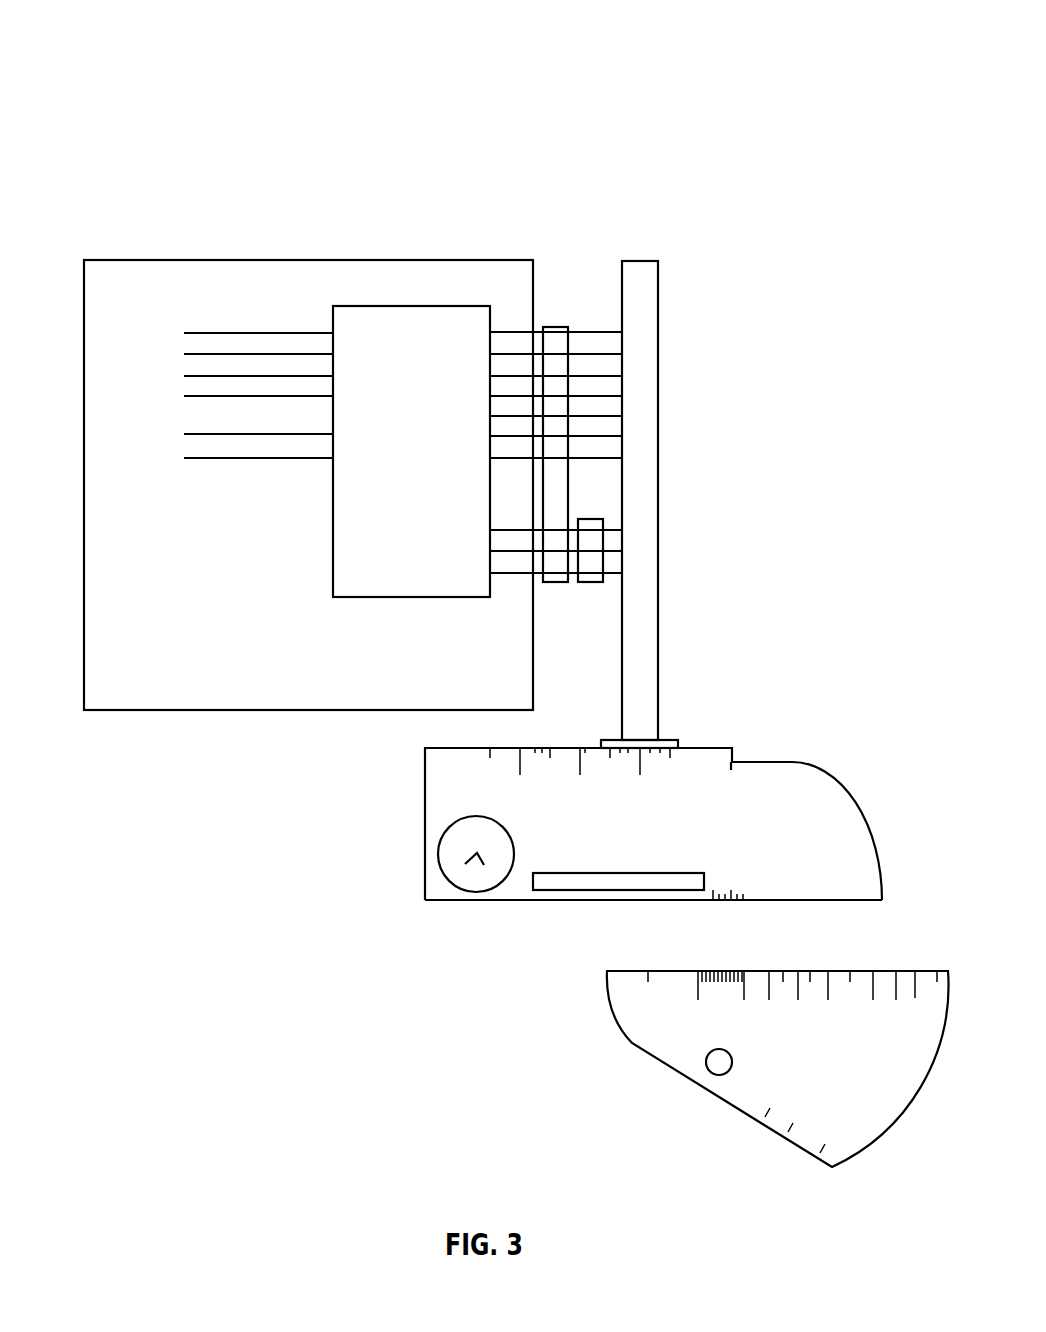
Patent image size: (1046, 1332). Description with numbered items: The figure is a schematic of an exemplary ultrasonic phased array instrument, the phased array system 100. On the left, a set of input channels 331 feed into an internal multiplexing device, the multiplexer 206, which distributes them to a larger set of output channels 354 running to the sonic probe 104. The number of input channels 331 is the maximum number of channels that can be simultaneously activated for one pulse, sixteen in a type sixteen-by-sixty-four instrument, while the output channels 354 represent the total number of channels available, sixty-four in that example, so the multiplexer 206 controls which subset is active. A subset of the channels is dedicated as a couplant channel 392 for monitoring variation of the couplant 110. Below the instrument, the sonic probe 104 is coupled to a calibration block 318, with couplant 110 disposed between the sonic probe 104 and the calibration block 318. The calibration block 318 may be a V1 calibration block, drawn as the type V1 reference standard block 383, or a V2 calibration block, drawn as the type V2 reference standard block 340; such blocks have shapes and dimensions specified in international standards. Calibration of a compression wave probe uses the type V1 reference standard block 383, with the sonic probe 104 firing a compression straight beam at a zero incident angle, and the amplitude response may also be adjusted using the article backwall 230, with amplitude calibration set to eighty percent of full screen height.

The phased array system 100 is at (178, 124).
The input channels 331 is at (269, 338).
The multiplexer 206 is at (390, 304).
The output channels 354 is at (556, 326).
The sonic probe 104 is at (640, 260).
The couplant channel 392 is at (603, 537).
The couplant 110 is at (676, 740).
The calibration block 318 is at (555, 942).
The type V1 reference standard block 383 is at (425, 838).
The article backwall 230 is at (653, 900).
The type V2 reference standard block 340 is at (632, 1043).